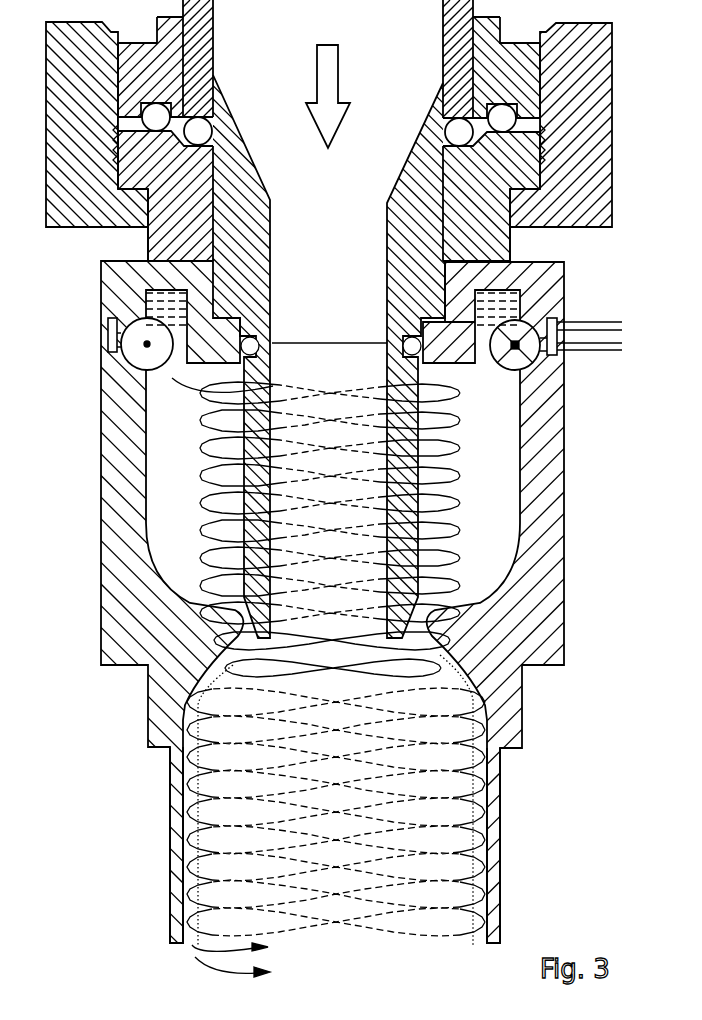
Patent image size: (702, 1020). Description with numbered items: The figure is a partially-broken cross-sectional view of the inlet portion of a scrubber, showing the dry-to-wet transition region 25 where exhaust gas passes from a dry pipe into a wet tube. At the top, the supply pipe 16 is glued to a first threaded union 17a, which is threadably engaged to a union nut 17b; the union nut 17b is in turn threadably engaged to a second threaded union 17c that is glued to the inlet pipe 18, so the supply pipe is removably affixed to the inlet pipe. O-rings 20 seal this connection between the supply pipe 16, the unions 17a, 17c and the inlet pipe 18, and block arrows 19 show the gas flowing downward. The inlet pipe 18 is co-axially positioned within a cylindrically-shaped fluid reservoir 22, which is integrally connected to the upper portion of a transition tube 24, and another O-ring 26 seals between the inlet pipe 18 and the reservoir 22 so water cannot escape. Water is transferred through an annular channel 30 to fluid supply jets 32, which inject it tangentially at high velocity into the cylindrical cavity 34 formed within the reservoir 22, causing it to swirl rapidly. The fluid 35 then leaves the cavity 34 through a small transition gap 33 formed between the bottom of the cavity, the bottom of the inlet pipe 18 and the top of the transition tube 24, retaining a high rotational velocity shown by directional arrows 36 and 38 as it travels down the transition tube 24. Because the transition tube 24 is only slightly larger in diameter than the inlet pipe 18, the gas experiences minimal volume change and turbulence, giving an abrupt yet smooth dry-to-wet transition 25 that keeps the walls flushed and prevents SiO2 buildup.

The supply pipe 16 is at (455, 22).
The first threaded union 17a is at (507, 48).
The union nut 17b is at (580, 22).
The second threaded union 17c is at (495, 246).
The inlet pipe 18 is at (415, 172).
The block arrows 19 is at (330, 57).
The O-rings 20 is at (498, 114).
The fluid reservoir 22 is at (105, 483).
The transition tube 24 is at (177, 892).
The dry-to-wet transition region 25 is at (440, 658).
The O-ring 26 is at (387, 343).
The annular channel 30 is at (562, 335).
The fluid supply jets 32 is at (122, 322).
The transition gap 33 is at (440, 612).
The cylindrical cavity 34 is at (497, 530).
The fluid 35 is at (480, 830).
The directional arrow 36 is at (457, 903).
The directional arrow 38 is at (440, 933).